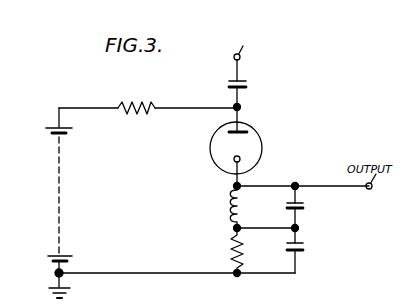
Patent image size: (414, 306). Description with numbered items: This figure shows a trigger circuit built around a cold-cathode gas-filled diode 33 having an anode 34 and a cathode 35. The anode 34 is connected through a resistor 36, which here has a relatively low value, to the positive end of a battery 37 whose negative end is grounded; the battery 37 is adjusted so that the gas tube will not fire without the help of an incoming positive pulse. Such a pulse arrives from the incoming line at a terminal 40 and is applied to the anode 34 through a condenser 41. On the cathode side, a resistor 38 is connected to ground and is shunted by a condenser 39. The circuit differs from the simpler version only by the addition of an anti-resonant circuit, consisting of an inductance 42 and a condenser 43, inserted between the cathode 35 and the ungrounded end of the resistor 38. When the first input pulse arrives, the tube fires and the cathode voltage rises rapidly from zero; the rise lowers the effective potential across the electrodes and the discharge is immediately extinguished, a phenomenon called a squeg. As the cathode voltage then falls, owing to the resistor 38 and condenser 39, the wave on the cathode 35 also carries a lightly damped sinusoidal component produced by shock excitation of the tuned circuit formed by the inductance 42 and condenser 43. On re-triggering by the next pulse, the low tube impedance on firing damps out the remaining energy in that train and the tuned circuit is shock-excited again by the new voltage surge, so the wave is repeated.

The cold-cathode gas-filled diode 33 is at (245, 146).
The anode 34 is at (243, 128).
The cathode 35 is at (240, 157).
The resistor 36 is at (140, 99).
The battery 37 is at (55, 178).
The resistor 38 is at (230, 255).
The condenser 39 is at (304, 247).
The terminal 40 is at (242, 57).
The condenser 41 is at (250, 78).
The inductance 42 is at (230, 207).
The condenser 43 is at (302, 205).